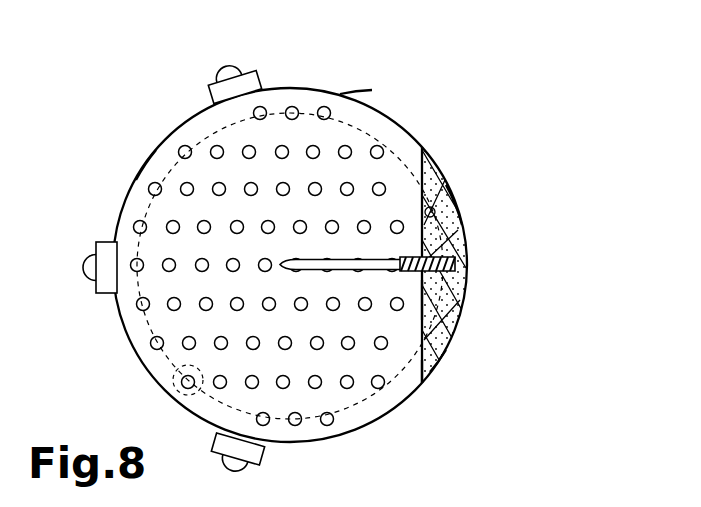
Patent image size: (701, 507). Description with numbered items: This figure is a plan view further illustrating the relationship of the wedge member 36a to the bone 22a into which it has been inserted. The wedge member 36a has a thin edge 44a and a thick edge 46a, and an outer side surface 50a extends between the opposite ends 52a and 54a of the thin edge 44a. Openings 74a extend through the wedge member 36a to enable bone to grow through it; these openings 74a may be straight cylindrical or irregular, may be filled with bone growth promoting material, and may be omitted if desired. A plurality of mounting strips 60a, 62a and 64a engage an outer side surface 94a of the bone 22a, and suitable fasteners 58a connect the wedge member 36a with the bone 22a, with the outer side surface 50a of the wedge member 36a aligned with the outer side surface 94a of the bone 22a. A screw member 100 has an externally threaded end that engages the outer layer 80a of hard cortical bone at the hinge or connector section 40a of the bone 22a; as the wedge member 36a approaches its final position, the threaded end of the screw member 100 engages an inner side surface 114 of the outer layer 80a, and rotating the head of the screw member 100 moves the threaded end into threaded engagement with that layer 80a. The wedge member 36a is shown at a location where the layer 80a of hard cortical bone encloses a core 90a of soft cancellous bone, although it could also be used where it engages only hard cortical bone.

The wedge member 36a is at (185, 98).
The thick edge 46a is at (146, 164).
The outer side surface 50a is at (355, 98).
The end of the thin edge 52a is at (421, 147).
The end of the thin edge 54a is at (423, 384).
The fasteners 58a is at (230, 70).
The mounting strip 60a is at (247, 82).
The mounting strip 62a is at (105, 292).
The mounting strip 64a is at (267, 453).
The openings 74a is at (350, 350).
The outer layer of hard cortical bone 80a is at (173, 375).
The core of soft cancellous bone 90a is at (432, 243).
The screw member 100 is at (470, 252).
The inner side surface 114 is at (434, 207).
The bone 22a is at (470, 201).
The hinge or connector section 40a is at (462, 289).
The thin edge 44a is at (442, 300).
The outer side surface of the bone 94a is at (438, 362).